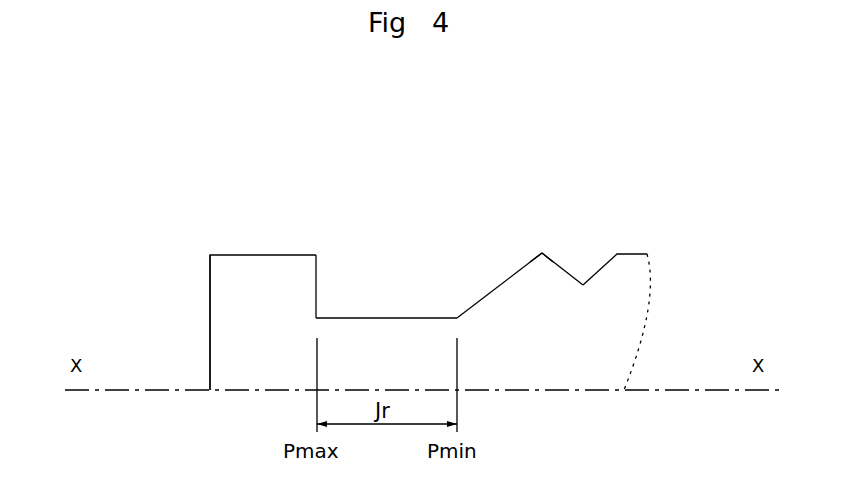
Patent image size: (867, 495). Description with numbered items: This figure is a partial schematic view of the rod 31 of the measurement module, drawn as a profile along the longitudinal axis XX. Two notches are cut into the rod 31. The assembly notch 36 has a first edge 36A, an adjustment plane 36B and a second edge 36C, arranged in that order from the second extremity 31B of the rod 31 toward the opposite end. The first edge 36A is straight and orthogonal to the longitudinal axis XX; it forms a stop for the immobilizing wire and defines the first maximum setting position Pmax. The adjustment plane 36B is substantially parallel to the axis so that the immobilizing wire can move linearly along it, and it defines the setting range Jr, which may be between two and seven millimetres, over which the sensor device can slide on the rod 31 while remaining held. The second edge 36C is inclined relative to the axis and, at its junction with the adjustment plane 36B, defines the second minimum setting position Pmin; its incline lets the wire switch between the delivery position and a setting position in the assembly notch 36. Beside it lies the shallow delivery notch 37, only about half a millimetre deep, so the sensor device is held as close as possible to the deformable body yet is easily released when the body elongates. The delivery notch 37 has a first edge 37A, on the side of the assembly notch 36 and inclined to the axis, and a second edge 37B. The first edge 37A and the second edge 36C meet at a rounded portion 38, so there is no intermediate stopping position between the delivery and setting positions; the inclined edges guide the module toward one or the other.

The rod 31 is at (245, 208).
The second extremity 31B is at (210, 322).
The assembly notch 36 is at (428, 222).
The first edge 36A is at (317, 271).
The adjustment plane 36B is at (388, 318).
The second edge 36C is at (493, 290).
The delivery notch 37 is at (587, 252).
The first edge 37A is at (573, 277).
The second edge 37B is at (598, 271).
The rounded portion 38 is at (542, 253).